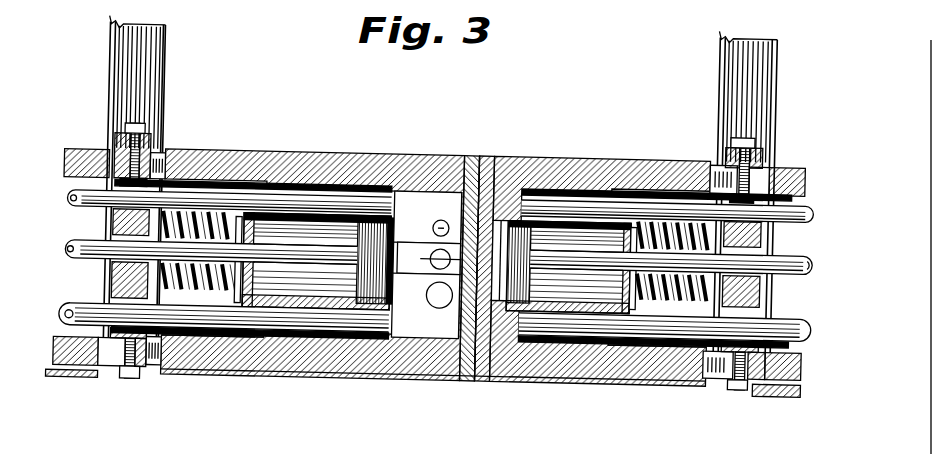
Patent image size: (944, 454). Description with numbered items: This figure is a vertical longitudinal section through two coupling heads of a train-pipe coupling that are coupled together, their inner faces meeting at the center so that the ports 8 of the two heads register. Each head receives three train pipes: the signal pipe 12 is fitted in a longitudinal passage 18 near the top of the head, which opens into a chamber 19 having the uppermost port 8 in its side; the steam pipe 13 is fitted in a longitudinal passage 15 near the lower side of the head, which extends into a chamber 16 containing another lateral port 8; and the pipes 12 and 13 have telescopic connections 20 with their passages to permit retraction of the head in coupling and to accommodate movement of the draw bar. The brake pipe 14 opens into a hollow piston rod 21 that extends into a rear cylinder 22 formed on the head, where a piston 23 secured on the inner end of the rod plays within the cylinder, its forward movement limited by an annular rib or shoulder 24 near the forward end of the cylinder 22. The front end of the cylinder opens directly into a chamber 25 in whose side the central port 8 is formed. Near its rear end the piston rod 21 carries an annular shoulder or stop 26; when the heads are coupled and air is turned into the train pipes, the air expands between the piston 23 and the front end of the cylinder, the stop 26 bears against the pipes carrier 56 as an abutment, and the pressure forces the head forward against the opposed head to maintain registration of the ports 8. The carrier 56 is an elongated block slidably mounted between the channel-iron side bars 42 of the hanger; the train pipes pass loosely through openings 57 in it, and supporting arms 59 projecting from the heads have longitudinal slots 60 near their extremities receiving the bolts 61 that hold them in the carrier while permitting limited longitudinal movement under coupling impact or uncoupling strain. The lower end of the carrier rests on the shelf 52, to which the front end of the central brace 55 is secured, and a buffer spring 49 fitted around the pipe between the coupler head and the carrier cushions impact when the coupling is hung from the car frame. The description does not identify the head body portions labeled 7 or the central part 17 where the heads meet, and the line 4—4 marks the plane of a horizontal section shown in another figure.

The section line 4 is at (68, 252).
The housing block 7 is at (388, 162).
The lateral port 8 is at (440, 313).
The signal pipe 12 is at (75, 190).
The steam pipe 13 is at (62, 331).
The brake pipe 14 is at (85, 245).
The longitudinal passage 15 is at (270, 368).
The chamber 16 is at (425, 306).
The central partition 17 is at (478, 382).
The longitudinal passage 18 is at (305, 190).
The chamber 19 is at (407, 210).
The telescopic connection 20 is at (355, 190).
The hollow piston rod 21 is at (317, 260).
The rear cylinder 22 is at (277, 213).
The piston 23 is at (442, 262).
The annular rib or shoulder 24 is at (380, 308).
The chamber 25 is at (407, 277).
The annular shoulder or stop 26 is at (253, 282).
The side bars 42 is at (140, 43).
The buffer spring 49 is at (434, 260).
The shelf 52 is at (213, 375).
The central brace 55 is at (50, 374).
The carrier 56 is at (145, 140).
The openings 57 is at (165, 176).
The supporting arms 59 is at (97, 148).
The longitudinal slots 60 is at (152, 166).
The bolts 61 is at (133, 124).